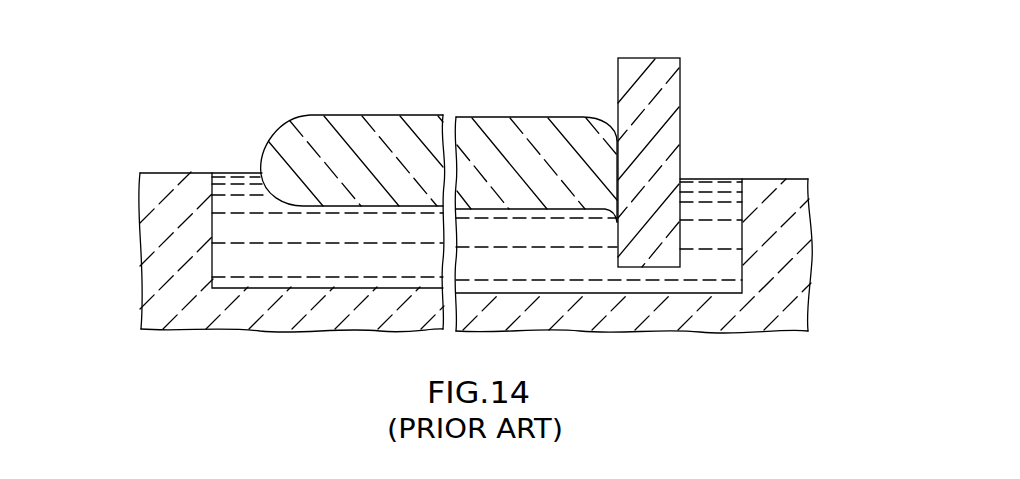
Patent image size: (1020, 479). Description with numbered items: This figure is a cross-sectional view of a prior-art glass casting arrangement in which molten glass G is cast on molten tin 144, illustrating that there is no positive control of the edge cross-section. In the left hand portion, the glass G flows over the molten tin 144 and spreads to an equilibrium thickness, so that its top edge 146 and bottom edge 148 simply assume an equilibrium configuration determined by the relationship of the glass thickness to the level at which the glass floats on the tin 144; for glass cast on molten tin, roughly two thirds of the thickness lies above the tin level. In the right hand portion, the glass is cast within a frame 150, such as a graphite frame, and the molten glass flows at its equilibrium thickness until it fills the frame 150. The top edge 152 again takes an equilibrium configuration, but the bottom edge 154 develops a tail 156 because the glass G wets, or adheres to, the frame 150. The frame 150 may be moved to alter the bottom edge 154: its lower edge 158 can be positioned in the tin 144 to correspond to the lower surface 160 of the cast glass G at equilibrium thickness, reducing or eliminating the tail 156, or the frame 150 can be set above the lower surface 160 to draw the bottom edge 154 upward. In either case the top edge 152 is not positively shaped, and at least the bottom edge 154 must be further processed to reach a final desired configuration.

The molten tin 144 is at (273, 284).
The top edge 146 is at (284, 131).
The glass G is at (348, 116).
The bottom edge 148 is at (259, 182).
The frame 150 is at (680, 110).
The top edge 152 is at (613, 122).
The bottom edge 154 is at (612, 220).
The tail 156 is at (616, 254).
The lower edge 158 is at (661, 268).
The lower surface 160 is at (382, 208).